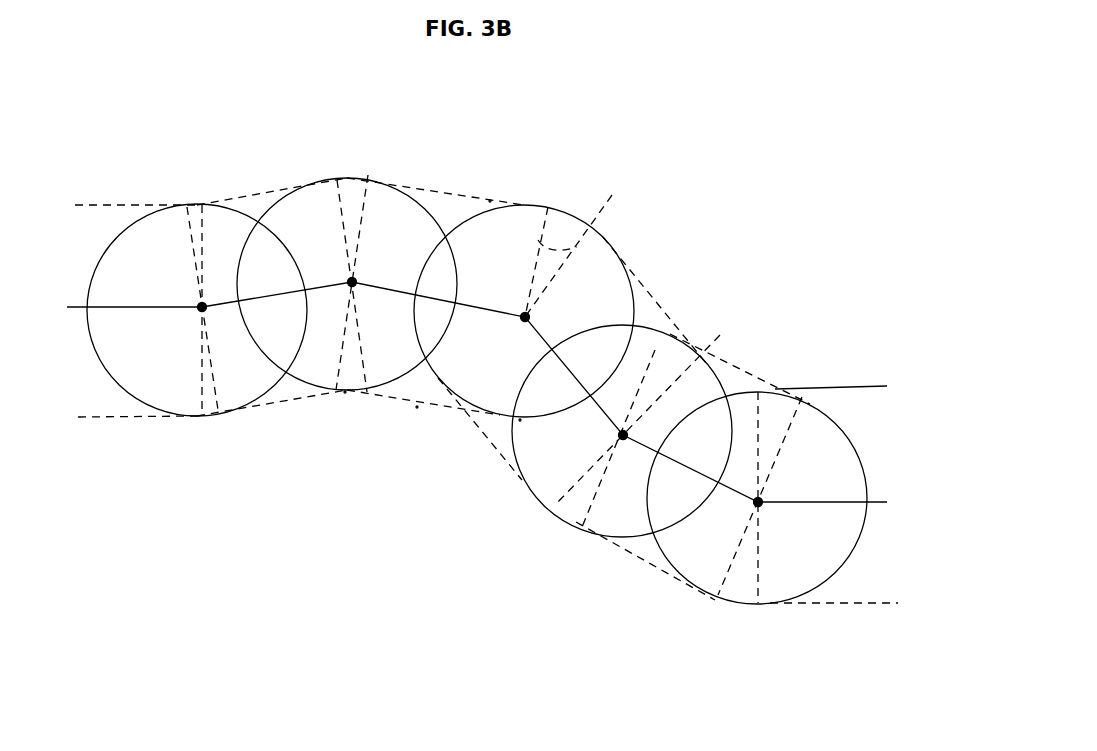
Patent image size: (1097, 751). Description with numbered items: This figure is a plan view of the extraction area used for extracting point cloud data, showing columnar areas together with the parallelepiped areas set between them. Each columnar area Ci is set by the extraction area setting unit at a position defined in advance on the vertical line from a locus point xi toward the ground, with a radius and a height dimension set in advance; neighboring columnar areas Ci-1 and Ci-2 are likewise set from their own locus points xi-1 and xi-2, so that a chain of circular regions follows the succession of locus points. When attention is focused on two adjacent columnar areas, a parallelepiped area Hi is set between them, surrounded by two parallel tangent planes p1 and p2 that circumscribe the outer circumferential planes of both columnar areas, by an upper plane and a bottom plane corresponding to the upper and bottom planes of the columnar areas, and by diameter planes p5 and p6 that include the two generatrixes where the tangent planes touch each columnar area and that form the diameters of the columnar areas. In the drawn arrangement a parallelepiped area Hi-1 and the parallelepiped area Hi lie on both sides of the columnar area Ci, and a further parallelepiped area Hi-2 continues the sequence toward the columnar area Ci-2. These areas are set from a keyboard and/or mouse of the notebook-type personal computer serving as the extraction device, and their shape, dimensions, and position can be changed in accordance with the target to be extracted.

The columnar area Ci is at (565, 227).
The columnar area Ci-1 is at (673, 355).
The columnar area Ci-2 is at (797, 420).
The locus point xi is at (525, 317).
The locus point xi-1 is at (623, 435).
The locus point xi-2 is at (758, 502).
The parallelepiped area Hi is at (500, 443).
The parallelepiped area Hi-1 is at (640, 558).
The parallelepiped area Hi-2 is at (855, 602).
The tangent plane p2 is at (490, 200).
The diameter plane p6 is at (345, 392).
The tangent plane p1 is at (417, 407).
The diameter plane p5 is at (525, 317).